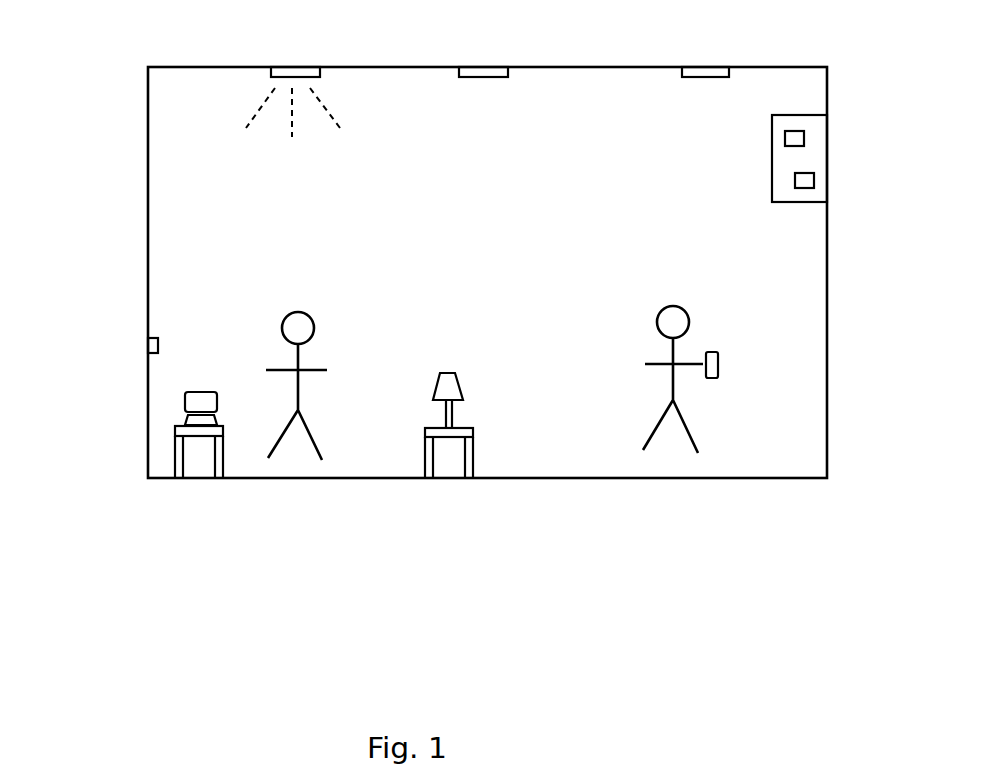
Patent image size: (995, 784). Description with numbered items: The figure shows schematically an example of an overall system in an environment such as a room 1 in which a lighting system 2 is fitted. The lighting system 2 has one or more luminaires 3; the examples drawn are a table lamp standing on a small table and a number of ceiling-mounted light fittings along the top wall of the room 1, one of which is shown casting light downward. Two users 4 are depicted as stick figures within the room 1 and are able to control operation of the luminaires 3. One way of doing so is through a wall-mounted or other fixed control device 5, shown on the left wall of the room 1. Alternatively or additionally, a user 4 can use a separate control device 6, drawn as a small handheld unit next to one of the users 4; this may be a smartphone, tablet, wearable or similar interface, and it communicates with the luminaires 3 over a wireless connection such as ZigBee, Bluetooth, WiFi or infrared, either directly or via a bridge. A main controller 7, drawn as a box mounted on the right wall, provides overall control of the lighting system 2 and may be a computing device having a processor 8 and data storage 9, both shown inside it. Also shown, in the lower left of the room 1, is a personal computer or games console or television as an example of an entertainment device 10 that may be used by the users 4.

The room 1 is at (148, 180).
The lighting system 2 is at (120, 250).
The luminaires 3 is at (286, 67).
The users 4 is at (297, 358).
The fixed control device 5 is at (158, 347).
The control device 6 is at (712, 352).
The main controller 7 is at (792, 115).
The processor 8 is at (785, 138).
The data storage 9 is at (795, 180).
The entertainment device 10 is at (180, 403).